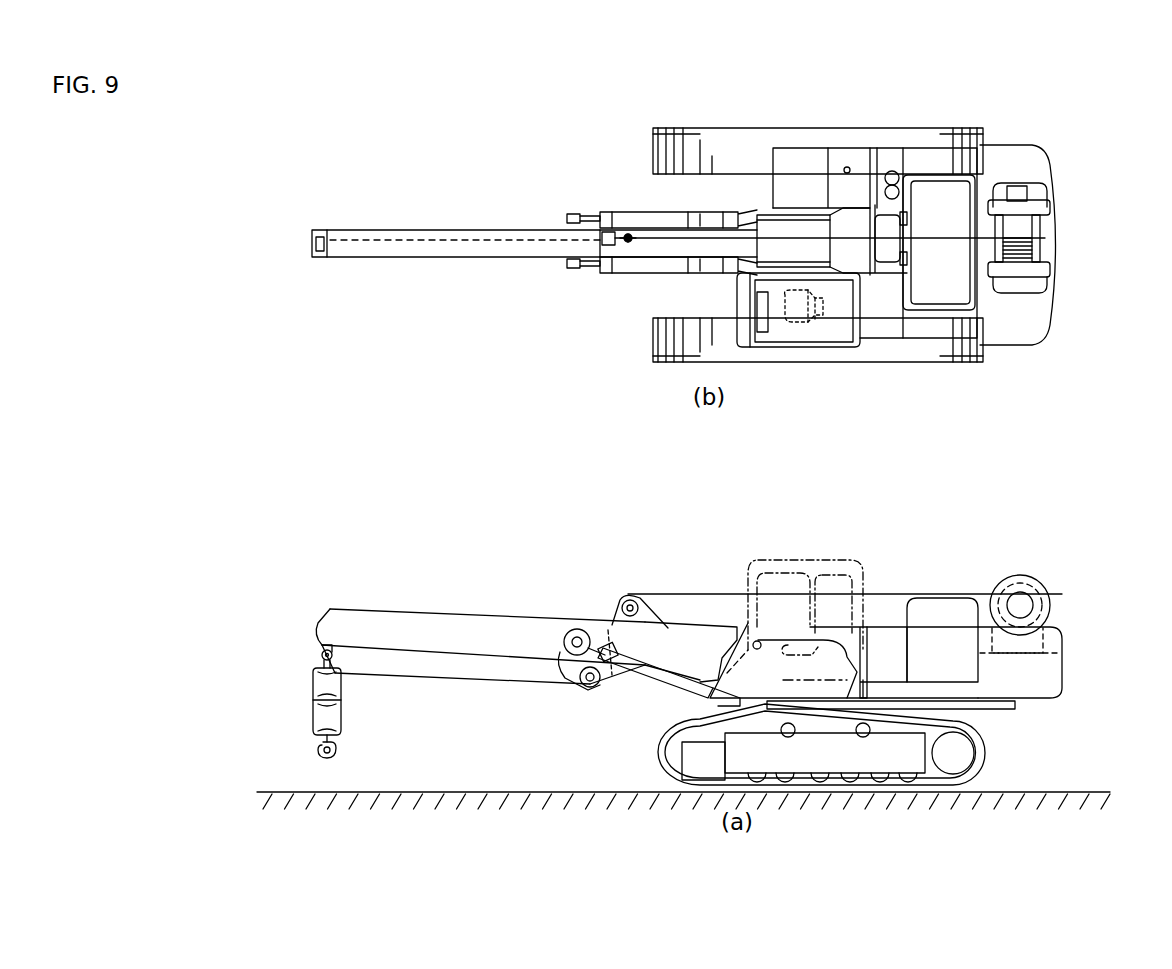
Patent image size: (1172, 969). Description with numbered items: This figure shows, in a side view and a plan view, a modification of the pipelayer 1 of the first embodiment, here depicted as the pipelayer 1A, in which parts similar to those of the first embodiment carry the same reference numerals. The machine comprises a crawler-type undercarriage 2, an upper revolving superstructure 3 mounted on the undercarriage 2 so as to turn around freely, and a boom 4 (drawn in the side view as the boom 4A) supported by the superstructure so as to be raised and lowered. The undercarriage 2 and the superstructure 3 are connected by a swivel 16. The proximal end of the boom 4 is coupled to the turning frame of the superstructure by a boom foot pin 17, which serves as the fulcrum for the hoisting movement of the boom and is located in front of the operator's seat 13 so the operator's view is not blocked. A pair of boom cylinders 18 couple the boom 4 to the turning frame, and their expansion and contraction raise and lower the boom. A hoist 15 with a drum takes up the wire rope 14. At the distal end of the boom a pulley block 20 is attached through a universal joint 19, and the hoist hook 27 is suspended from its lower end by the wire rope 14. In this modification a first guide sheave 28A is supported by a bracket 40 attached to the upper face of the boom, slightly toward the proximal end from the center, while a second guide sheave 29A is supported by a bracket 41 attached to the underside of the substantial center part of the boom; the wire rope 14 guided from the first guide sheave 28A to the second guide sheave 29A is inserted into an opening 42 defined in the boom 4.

The crane vehicle 1A is at (1093, 150).
The pipelayer 1 is at (907, 594).
The crawler-type undercarriage 2 is at (760, 128).
The upper revolving superstructure 3 is at (1068, 250).
The boom 4 is at (462, 230).
The boom 4A is at (470, 610).
The operator's seat 13 is at (805, 330).
The wire rope 14 is at (935, 230).
The hoist (winch) 15 is at (1055, 207).
The swivel 16 is at (767, 706).
The boom foot pin 17 is at (755, 638).
The boom cylinders 18 is at (620, 212).
The universal joint 19 is at (308, 656).
The pulley block 20 is at (308, 700).
The hoist hook 27 is at (312, 748).
The first guide sheave 28A is at (632, 234).
The second guide sheave 29A is at (585, 690).
The bracket 40 is at (662, 625).
The bracket 41 is at (565, 662).
The opening 42 is at (608, 275).